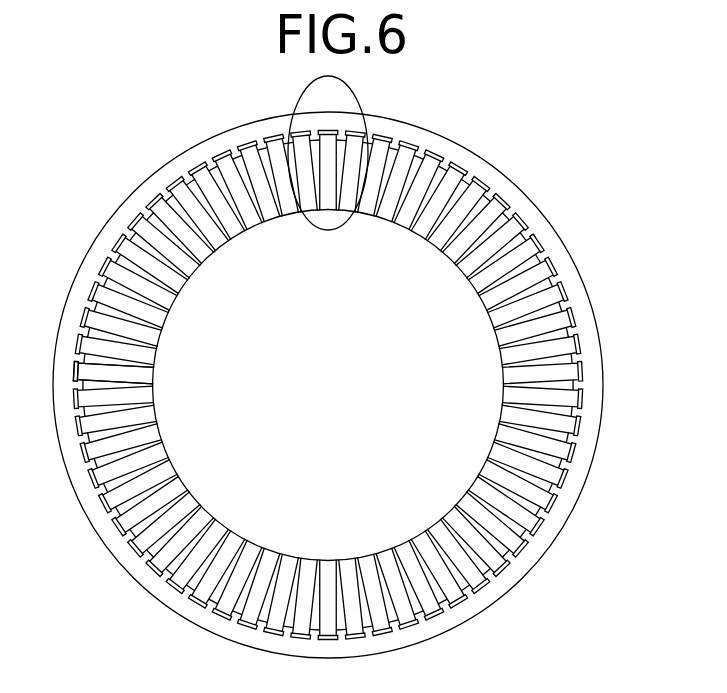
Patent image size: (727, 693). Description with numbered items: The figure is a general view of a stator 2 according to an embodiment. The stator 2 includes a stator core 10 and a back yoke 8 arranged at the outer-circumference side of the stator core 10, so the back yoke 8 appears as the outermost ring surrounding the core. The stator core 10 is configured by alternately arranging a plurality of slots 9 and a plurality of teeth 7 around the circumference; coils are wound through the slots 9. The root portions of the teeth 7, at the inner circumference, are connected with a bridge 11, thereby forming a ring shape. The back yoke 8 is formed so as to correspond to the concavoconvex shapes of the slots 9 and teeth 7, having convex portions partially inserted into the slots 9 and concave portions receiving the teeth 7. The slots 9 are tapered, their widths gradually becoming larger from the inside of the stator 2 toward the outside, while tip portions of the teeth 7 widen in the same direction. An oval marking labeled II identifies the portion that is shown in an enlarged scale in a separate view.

The stator 2 is at (117, 171).
The teeth 7 is at (495, 208).
The back yoke 8 is at (585, 322).
The slots 9 is at (488, 312).
The stator core 10 is at (155, 341).
The bridge 11 is at (149, 402).
The portion II is at (358, 100).